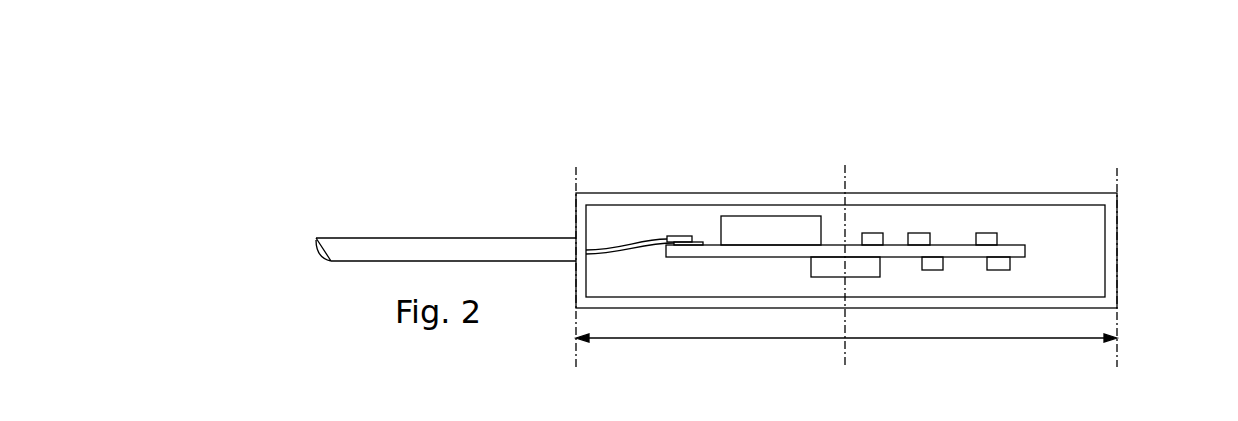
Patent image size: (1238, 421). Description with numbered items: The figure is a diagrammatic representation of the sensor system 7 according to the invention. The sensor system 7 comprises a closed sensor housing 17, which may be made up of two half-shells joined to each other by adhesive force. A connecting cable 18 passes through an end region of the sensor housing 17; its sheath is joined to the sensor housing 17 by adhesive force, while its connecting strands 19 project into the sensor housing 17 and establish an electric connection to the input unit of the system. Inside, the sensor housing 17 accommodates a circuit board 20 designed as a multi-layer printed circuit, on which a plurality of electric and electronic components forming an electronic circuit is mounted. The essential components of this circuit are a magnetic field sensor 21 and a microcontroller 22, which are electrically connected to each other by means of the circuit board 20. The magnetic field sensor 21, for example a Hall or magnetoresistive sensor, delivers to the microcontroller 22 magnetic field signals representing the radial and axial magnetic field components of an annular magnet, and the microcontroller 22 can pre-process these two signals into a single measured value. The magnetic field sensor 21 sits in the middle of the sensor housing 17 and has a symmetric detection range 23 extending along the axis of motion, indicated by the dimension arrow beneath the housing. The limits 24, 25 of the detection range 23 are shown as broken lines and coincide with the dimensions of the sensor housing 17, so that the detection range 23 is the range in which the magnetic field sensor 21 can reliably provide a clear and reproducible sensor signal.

The sensor system 7 is at (907, 181).
The sensor housing 17 is at (1095, 194).
The connecting cable 18 is at (435, 248).
The connecting strands 19 is at (642, 242).
The circuit board 20 is at (965, 252).
The magnetic field sensor 21 is at (831, 268).
The microcontroller 22 is at (747, 227).
The detection range 23 is at (1037, 339).
The limit of the detection range 24 is at (575, 182).
The limit of the detection range 25 is at (1118, 182).